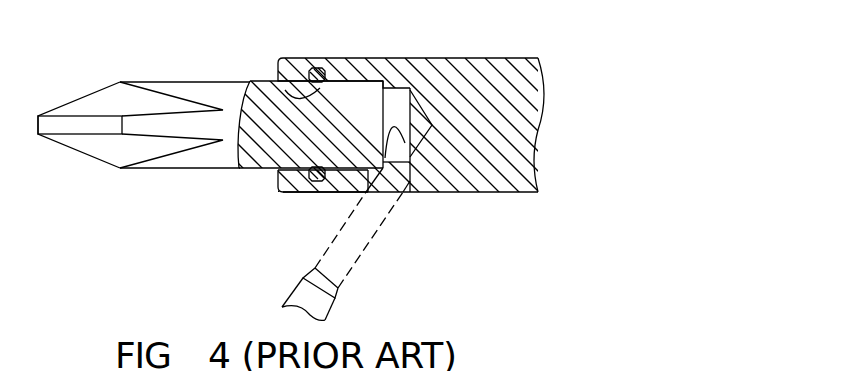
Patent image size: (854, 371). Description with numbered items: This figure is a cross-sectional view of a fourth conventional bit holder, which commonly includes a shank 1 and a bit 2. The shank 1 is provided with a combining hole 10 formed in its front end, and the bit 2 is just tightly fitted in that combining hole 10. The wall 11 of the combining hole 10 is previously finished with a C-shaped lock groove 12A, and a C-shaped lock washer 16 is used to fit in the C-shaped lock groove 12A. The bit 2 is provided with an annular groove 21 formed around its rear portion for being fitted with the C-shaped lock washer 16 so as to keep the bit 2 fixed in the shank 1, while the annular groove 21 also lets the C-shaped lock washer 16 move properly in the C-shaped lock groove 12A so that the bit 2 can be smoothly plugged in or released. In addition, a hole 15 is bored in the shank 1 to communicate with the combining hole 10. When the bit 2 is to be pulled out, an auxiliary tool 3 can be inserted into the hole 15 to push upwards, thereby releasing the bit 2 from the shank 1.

The shank 1 is at (427, 77).
The bit 2 is at (187, 88).
The auxiliary tool 3 is at (320, 295).
The combining hole 10 is at (268, 175).
The wall 11 is at (355, 67).
The C-shaped lock groove 12A is at (299, 189).
The hole 15 is at (398, 193).
The C-shaped lock washer 16 is at (318, 68).
The annular groove 21 is at (285, 92).